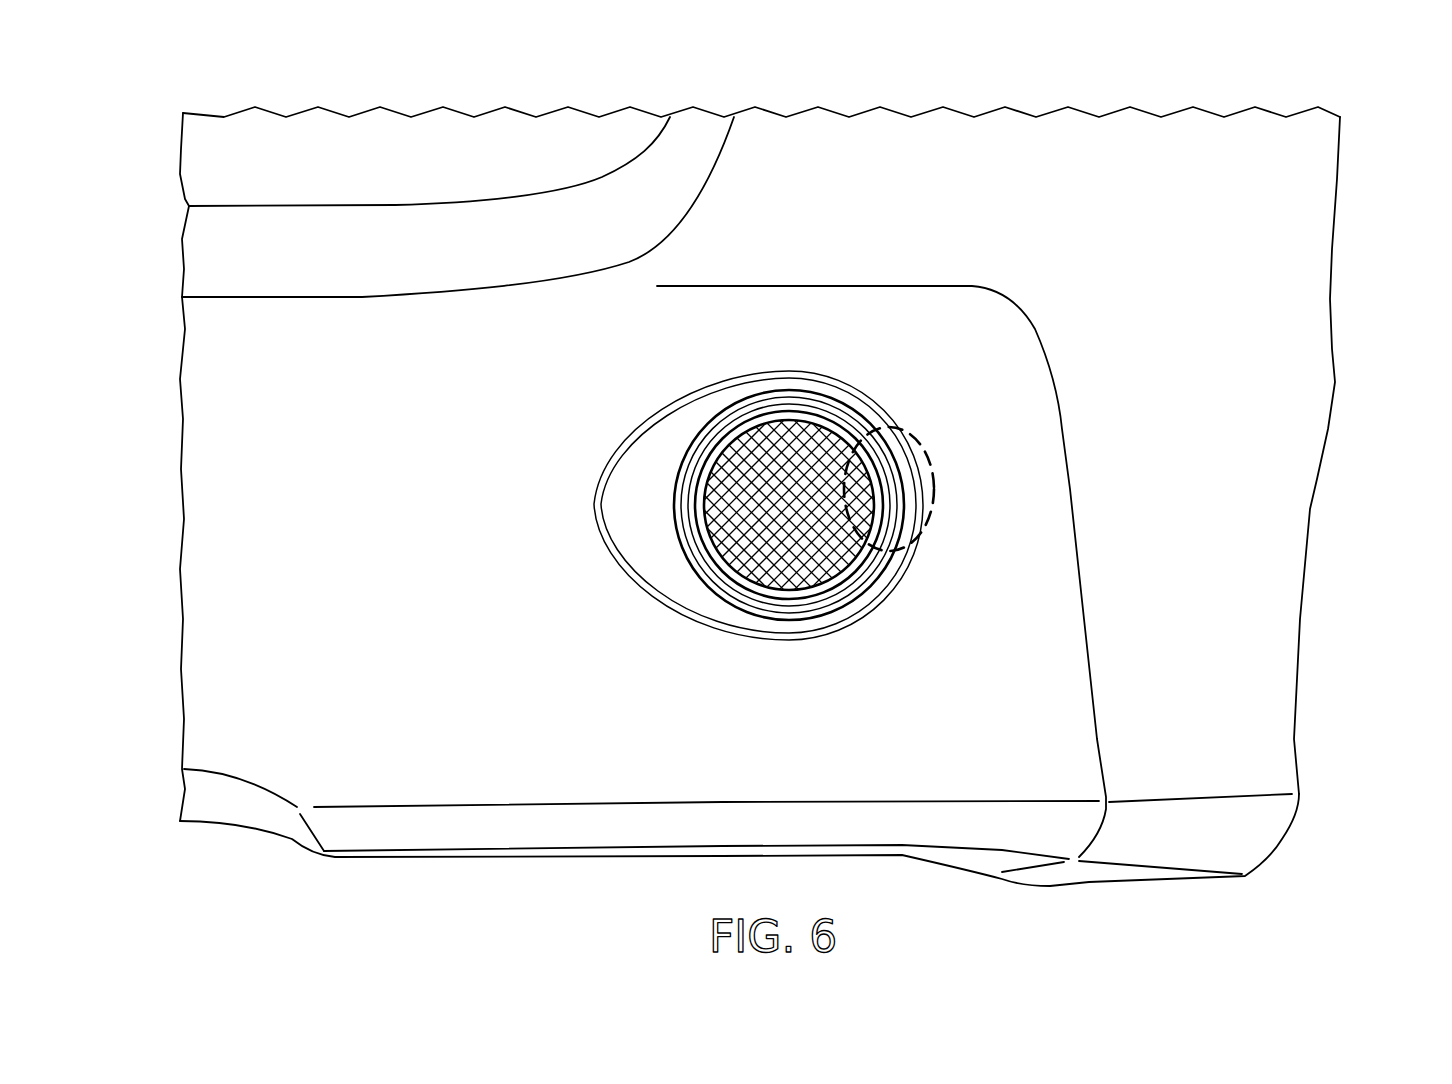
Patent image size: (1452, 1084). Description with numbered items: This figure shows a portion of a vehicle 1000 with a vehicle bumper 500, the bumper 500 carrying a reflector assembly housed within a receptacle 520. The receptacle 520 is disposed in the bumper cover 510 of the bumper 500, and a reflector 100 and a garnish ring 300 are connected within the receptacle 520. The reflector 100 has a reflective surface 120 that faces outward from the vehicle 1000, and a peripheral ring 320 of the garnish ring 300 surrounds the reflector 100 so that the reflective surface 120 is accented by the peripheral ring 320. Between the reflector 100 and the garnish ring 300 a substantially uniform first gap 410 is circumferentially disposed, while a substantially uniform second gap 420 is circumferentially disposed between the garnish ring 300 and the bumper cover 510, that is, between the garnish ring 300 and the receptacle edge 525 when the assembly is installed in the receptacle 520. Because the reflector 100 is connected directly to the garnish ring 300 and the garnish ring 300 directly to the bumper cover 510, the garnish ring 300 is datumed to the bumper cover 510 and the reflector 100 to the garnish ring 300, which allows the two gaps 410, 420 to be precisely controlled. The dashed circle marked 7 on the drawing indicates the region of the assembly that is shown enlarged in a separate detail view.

The vehicle 1000 is at (203, 130).
The vehicle bumper 500 is at (1305, 272).
The bumper cover 510 is at (470, 573).
The receptacle 520 is at (617, 520).
The receptacle edge 525 is at (642, 425).
The garnish ring 300 is at (910, 405).
The peripheral ring 320 is at (813, 407).
The first gap 410 is at (745, 588).
The second gap 420 is at (781, 613).
The reflector 100 is at (813, 562).
The reflective surface 120 is at (748, 440).
The detail region of FIG. 7 is at (930, 497).